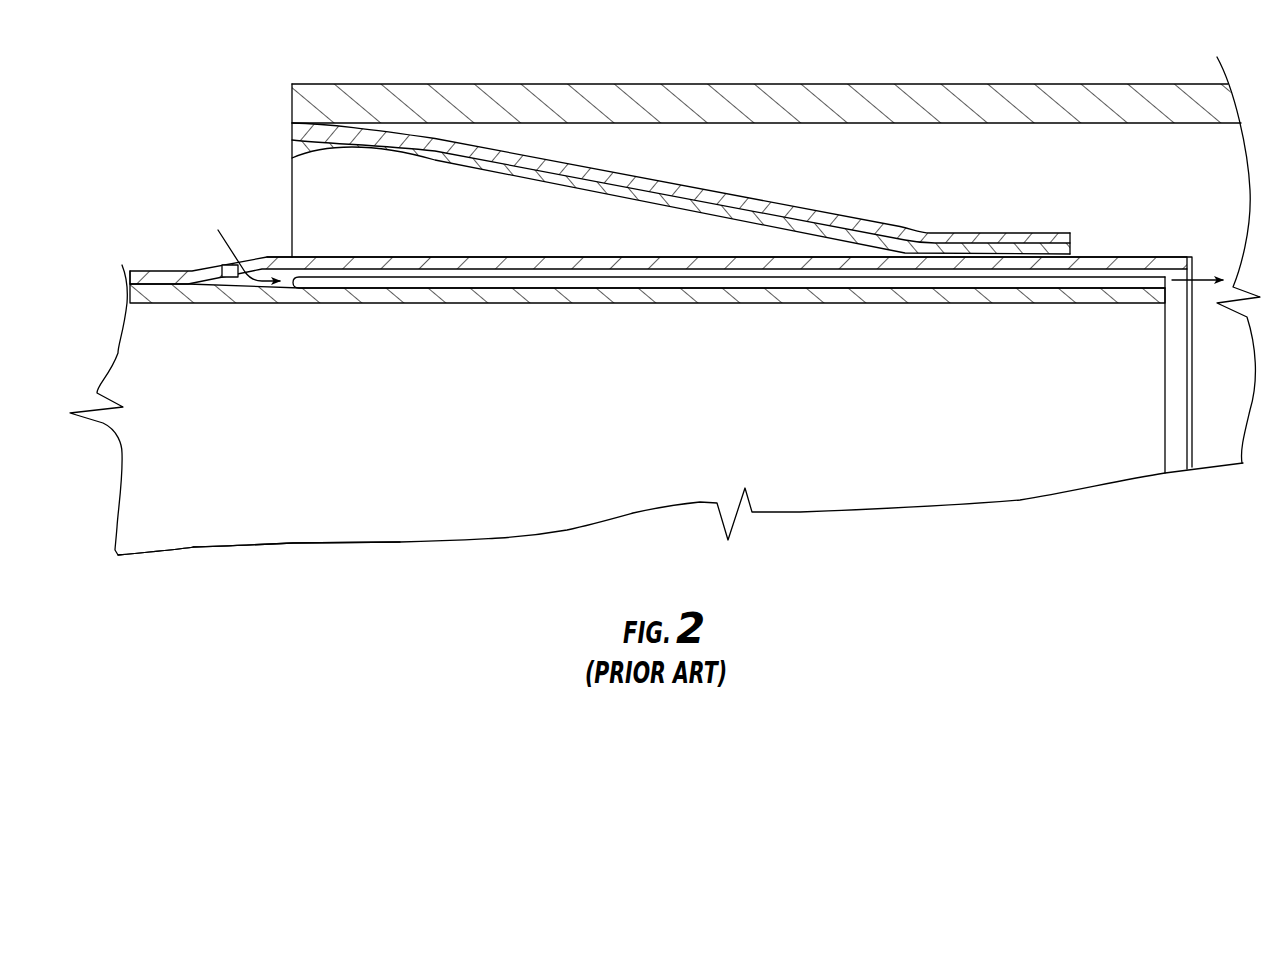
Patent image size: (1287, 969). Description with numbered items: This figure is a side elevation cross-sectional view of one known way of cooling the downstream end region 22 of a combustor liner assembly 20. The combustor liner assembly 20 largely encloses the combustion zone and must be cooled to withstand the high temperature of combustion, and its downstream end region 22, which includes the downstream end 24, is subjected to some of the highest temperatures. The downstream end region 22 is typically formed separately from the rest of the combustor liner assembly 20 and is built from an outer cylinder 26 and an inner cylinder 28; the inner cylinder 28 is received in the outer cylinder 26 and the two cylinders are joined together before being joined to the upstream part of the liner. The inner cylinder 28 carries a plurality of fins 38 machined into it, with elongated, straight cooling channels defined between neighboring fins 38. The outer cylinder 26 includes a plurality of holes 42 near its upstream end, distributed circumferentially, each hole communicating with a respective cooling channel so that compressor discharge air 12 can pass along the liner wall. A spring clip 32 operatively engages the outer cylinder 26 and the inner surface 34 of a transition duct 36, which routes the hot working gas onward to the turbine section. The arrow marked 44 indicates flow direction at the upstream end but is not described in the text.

The compressor discharge air 12 is at (226, 233).
The combustor liner assembly 20 is at (1057, 480).
The downstream end region 22 is at (391, 566).
The downstream end 24 is at (1190, 424).
The outer cylinder 26 is at (470, 256).
The inner cylinder 28 is at (522, 291).
The spring clip 32 is at (592, 190).
The inner surface 34 is at (643, 125).
The transition duct 36 is at (703, 95).
The fins 38 is at (680, 288).
The holes 42 is at (240, 265).
The inlet 44 is at (137, 254).